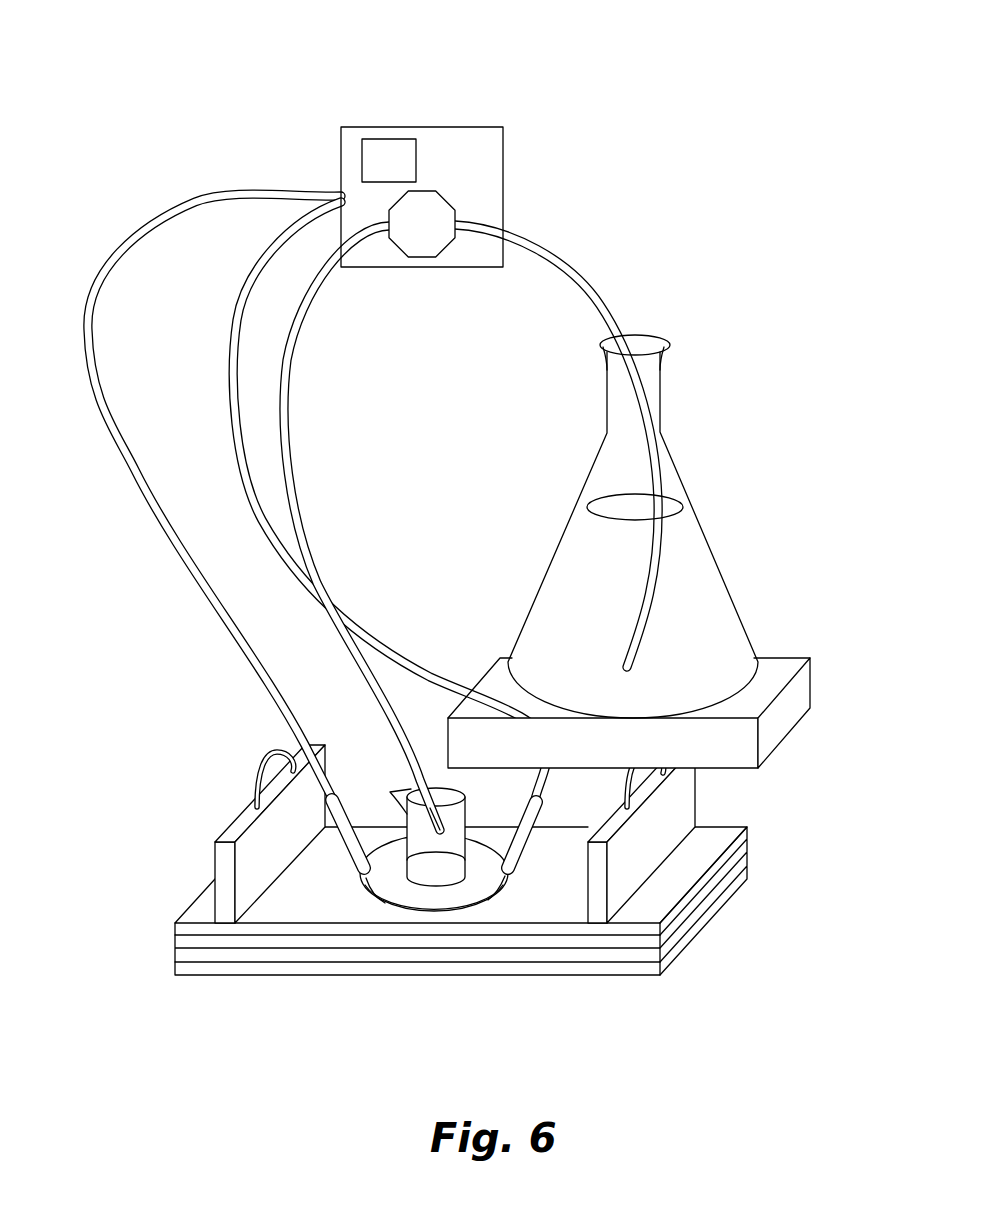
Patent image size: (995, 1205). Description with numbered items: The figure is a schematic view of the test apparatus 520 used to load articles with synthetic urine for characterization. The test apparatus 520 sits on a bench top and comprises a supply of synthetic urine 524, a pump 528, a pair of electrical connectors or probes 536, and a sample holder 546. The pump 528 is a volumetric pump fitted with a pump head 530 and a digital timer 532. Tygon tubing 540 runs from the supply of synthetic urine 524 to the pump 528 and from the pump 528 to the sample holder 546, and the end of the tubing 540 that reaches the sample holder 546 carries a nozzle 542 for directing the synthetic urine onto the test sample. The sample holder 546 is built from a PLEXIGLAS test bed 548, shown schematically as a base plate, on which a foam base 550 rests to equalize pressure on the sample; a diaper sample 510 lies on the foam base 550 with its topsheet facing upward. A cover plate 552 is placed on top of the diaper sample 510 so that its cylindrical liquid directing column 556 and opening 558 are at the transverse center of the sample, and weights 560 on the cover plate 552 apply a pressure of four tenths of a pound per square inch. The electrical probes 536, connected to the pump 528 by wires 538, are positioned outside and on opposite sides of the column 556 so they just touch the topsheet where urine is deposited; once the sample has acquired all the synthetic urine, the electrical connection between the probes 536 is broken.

The diaper sample 510 is at (745, 852).
The test apparatus 520 is at (693, 302).
The supply of synthetic urine 524 is at (687, 577).
The pump 528 is at (464, 158).
The pump head 530 is at (427, 243).
The digital timer 532 is at (375, 155).
The electrical connector (probe) 536 is at (357, 858).
The wire 538 is at (405, 660).
The Tygon tubing 540 is at (550, 256).
The nozzle 542 is at (443, 825).
The sample holder 546 is at (195, 865).
The test bed 548 is at (593, 968).
The foam base 550 is at (697, 912).
The cover plate 552 is at (523, 925).
The cylindrical liquid directing column 556 is at (418, 840).
The opening 558 is at (440, 870).
The weight 560 is at (243, 822).